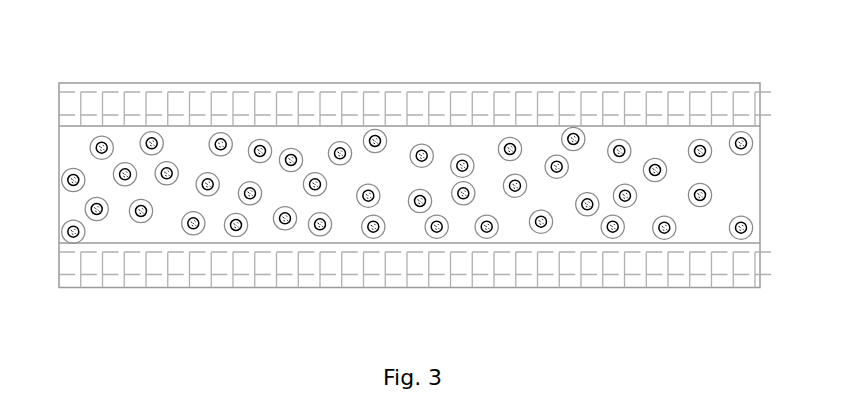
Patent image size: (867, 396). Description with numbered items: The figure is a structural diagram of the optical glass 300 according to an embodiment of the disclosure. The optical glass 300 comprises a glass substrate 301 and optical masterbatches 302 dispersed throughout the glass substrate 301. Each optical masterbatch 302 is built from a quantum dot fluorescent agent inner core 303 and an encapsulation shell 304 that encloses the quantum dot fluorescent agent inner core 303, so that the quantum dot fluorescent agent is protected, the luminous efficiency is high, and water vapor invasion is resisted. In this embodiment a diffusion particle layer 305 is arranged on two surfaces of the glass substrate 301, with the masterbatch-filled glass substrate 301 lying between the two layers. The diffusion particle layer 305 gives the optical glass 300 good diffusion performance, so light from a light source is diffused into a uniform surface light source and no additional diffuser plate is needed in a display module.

The optical glass 300 is at (409, 144).
The glass substrate 301 is at (442, 142).
The optical masterbatch 302 is at (306, 84).
The quantum dot fluorescent agent inner core 303 is at (222, 139).
The encapsulation shell 304 is at (216, 134).
The diffusion particle layer 305 is at (565, 107).